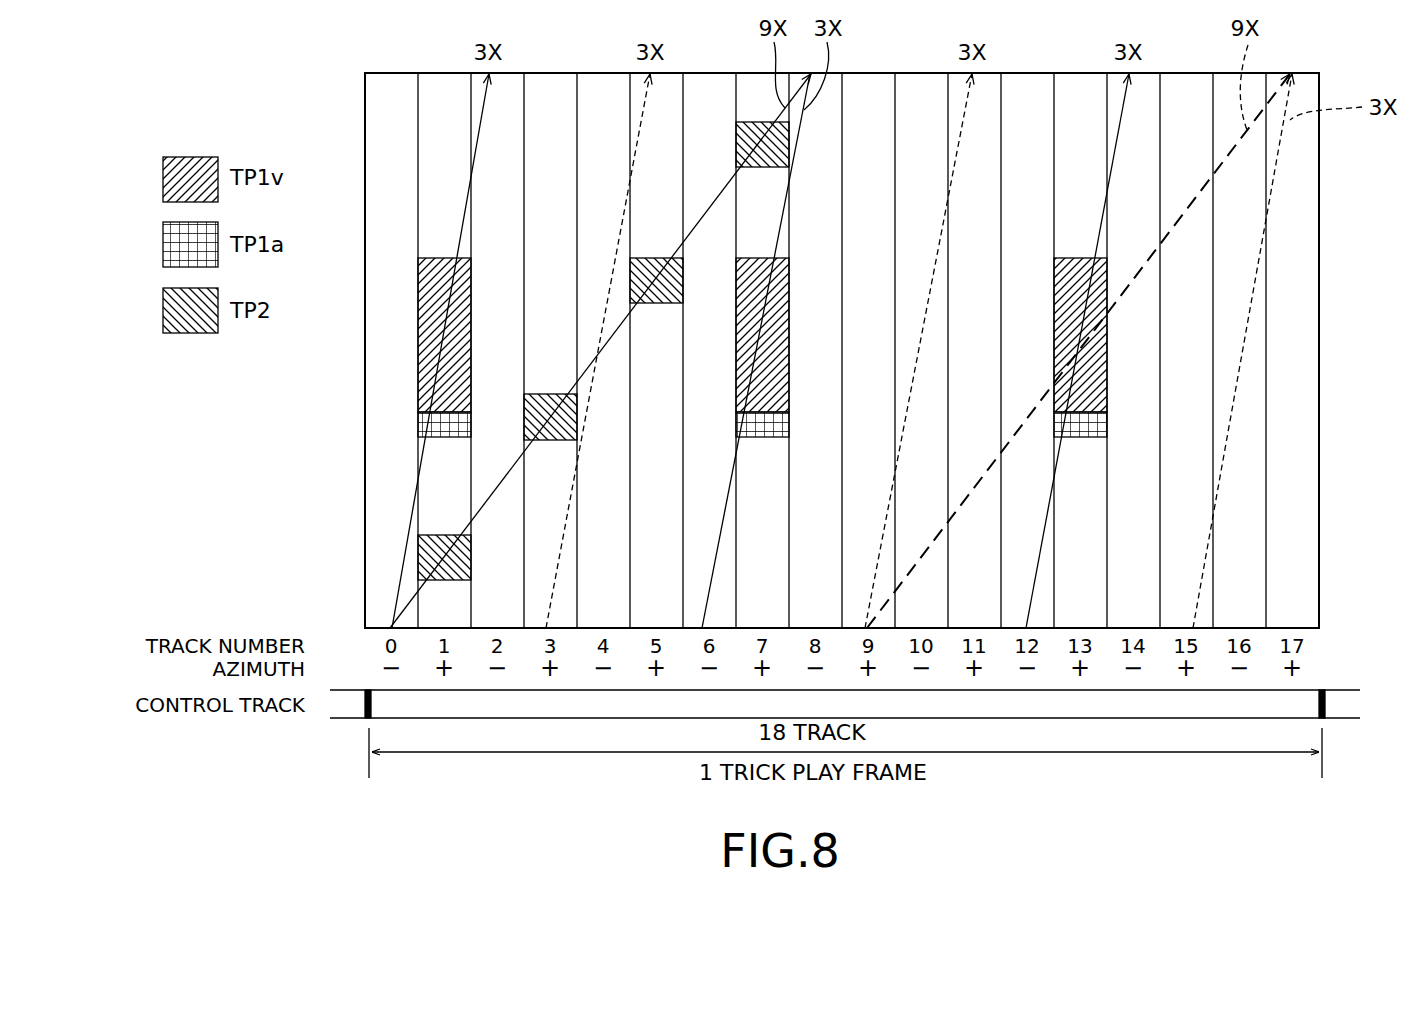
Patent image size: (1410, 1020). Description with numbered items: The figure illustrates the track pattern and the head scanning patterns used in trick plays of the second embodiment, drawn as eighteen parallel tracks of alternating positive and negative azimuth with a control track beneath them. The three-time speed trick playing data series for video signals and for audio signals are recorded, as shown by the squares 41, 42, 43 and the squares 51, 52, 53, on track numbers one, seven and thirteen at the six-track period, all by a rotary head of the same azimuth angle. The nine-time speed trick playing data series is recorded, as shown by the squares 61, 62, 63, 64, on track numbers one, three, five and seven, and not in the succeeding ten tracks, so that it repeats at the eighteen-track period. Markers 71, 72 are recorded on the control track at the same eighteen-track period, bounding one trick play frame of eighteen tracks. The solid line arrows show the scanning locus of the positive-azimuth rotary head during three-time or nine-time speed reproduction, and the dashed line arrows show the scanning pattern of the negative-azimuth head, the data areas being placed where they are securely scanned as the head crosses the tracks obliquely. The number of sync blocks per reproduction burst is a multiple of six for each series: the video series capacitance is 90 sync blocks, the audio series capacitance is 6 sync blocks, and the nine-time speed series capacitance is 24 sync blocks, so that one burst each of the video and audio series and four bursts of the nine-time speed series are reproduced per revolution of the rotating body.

The square 41 is at (471, 355).
The square 42 is at (789, 355).
The square 43 is at (1107, 353).
The square 51 is at (441, 437).
The square 52 is at (762, 437).
The square 53 is at (1079, 437).
The square 61 is at (471, 558).
The square 62 is at (548, 440).
The square 63 is at (655, 303).
The square 64 is at (757, 167).
The marker 71 is at (362, 700).
The marker 72 is at (1328, 702).
The sync block count of data series TP1v 90 is at (418, 412).
The sync block count of data series TP1a 6 is at (418, 437).
The sync block count of data series TP2 24 is at (418, 580).